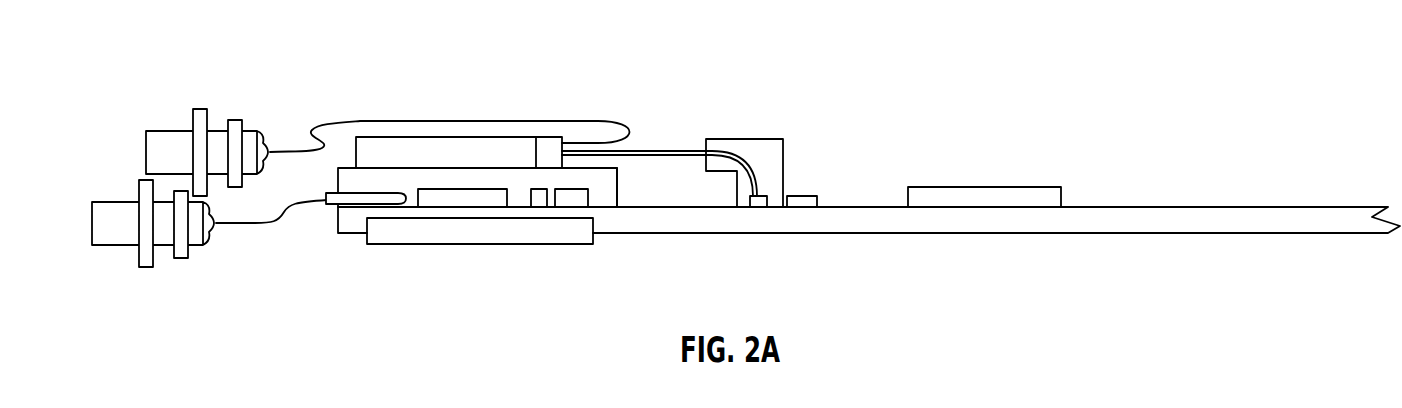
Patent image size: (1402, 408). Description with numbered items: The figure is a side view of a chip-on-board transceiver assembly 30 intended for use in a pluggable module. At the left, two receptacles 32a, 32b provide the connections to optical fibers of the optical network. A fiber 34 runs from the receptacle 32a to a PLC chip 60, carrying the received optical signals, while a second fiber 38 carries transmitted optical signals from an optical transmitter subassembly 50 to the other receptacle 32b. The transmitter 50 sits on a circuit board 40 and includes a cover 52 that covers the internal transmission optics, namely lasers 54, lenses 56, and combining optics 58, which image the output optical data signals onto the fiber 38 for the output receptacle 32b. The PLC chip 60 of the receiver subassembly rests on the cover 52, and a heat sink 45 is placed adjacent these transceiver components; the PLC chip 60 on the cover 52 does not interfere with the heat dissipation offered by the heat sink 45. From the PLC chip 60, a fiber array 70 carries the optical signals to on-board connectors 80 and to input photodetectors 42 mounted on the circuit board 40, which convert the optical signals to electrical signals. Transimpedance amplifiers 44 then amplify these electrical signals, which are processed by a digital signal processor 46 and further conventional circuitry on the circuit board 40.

The transceiver assembly 30 is at (248, 57).
The receptacle 32a is at (172, 131).
The receptacle 32b is at (118, 247).
The fiber 34 is at (339, 123).
The fiber 38 is at (262, 224).
The circuit board 40 is at (1163, 234).
The input photodetectors 42 is at (758, 207).
The transimpedance amplifiers 44 is at (817, 202).
The heat sink 45 is at (391, 245).
The digital signal processor 46 is at (985, 187).
The optical transmitter subassembly 50 is at (410, 167).
The cover 52 is at (618, 185).
The lasers 54 is at (569, 208).
The lenses 56 is at (539, 206).
The combining optics 58 is at (393, 208).
The PLC chip 60 is at (473, 137).
The fiber array 70 is at (650, 147).
The on-board connectors 80 is at (760, 139).